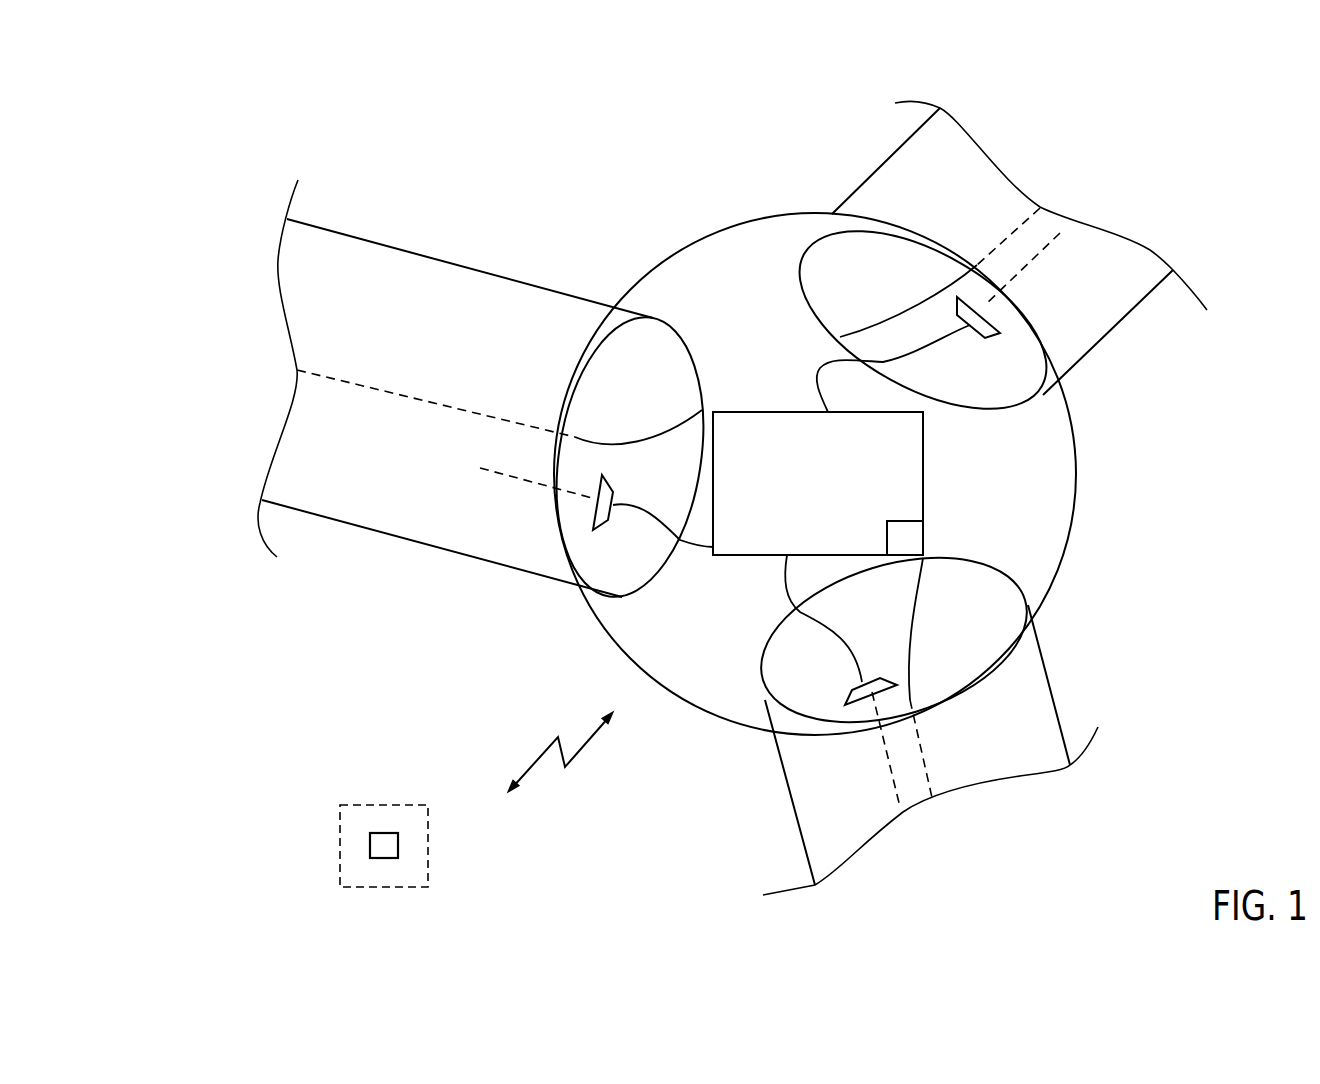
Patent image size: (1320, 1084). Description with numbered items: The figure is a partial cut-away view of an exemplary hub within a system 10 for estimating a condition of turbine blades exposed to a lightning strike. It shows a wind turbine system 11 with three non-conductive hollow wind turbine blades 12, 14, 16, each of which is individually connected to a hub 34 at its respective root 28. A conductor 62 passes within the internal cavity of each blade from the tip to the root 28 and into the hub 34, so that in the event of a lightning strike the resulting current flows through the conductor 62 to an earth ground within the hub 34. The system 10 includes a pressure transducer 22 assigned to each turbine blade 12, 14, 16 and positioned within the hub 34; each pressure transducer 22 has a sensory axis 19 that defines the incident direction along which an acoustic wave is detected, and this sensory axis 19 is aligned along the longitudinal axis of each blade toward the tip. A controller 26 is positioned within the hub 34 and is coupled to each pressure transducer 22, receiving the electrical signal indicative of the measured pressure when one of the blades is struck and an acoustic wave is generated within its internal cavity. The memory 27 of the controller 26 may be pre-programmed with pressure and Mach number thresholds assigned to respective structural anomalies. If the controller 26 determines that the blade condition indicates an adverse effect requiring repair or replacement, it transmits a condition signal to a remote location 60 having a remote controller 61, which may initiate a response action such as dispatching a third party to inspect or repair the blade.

The system 10 is at (558, 125).
The wind turbine system 11 is at (705, 194).
The wind turbine blade 12 is at (400, 248).
The wind turbine blade 14 is at (888, 153).
The wind turbine blade 16 is at (1058, 702).
The sensory axis 19 is at (497, 475).
The pressure transducer 22 is at (600, 532).
The controller 26 is at (925, 467).
The memory 27 is at (887, 525).
The root 28 is at (600, 298).
The hub 34 is at (1078, 477).
The remote location 60 is at (378, 805).
The remote controller 61 is at (398, 845).
The conductor 62 is at (393, 396).